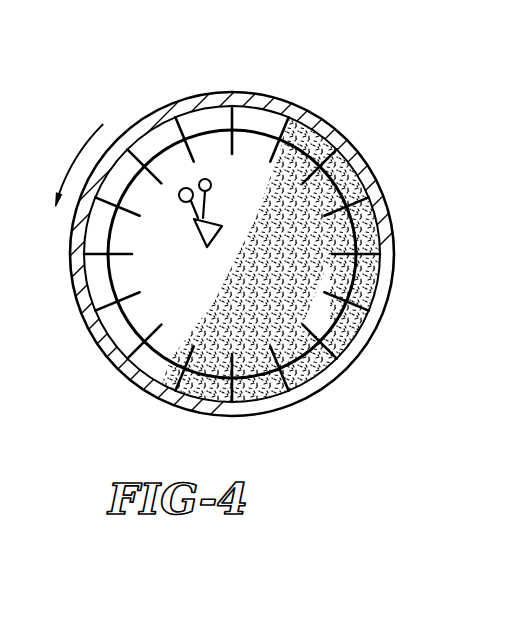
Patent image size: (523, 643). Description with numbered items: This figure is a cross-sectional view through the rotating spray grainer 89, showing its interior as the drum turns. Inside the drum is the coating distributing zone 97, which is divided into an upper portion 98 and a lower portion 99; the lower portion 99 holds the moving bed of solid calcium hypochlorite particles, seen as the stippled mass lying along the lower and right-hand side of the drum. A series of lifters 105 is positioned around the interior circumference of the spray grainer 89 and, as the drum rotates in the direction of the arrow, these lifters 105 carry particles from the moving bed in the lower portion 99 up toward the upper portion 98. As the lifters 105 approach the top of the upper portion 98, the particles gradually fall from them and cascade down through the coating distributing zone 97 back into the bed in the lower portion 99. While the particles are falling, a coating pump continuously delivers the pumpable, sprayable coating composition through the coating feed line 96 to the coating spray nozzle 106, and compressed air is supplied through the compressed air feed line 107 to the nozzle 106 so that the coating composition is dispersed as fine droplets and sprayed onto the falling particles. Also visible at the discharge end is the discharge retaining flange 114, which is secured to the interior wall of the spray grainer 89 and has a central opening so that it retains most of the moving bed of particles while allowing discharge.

The spray grainer 89 is at (275, 109).
The coating feed line 96 is at (186, 188).
The coating distributing zone 97 is at (78, 260).
The upper portion 98 is at (198, 147).
The lower portion 99 is at (308, 316).
The lifters 105 is at (185, 95).
The coating spray nozzle 106 is at (200, 238).
The compressed air feed line 107 is at (211, 184).
The discharge retaining flange 114 is at (301, 136).